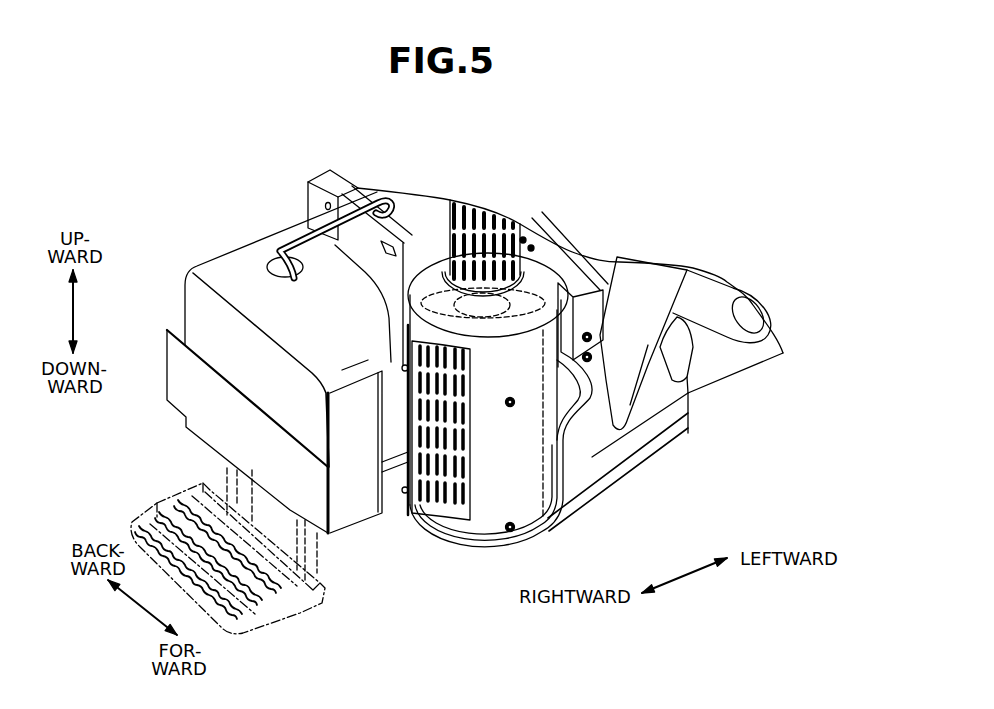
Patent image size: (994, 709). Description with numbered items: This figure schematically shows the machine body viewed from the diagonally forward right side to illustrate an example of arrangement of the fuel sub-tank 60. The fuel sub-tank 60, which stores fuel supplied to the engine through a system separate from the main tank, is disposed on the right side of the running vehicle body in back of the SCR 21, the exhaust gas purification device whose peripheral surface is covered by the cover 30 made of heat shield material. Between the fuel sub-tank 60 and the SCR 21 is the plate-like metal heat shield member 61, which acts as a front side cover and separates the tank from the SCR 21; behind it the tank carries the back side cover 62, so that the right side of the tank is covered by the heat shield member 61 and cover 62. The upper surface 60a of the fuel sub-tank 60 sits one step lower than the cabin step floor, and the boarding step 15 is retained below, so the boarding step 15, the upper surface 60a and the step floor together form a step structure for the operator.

The boarding step 15 is at (300, 617).
The SCR 21 is at (548, 462).
The cover 30 is at (418, 250).
The fuel sub-tank 60 is at (214, 252).
The upper surface 60a is at (252, 252).
The heat shield member 61 is at (375, 506).
The back side cover 62 is at (167, 345).